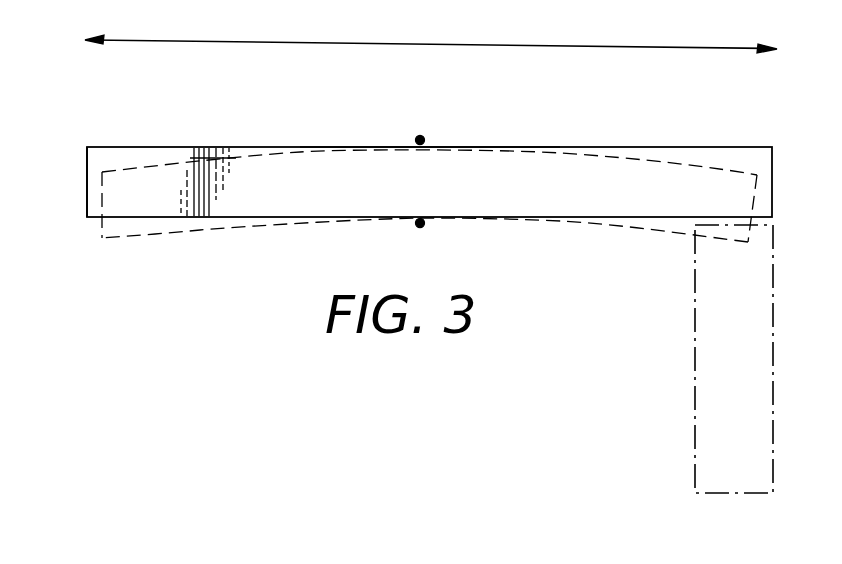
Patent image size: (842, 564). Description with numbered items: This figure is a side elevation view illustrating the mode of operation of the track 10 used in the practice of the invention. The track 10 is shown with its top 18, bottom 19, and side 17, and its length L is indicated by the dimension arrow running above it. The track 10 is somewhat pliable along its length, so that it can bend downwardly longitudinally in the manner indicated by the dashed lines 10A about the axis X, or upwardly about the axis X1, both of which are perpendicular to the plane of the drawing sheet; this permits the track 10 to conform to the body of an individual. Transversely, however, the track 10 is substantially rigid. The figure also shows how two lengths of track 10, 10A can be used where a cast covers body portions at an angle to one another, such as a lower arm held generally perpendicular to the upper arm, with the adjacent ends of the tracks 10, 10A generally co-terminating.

The track 10 is at (600, 123).
The dashed lines / second length of track 10A is at (196, 230).
The side 17 is at (131, 155).
The top 18 is at (343, 147).
The bottom 19 is at (88, 218).
The length L is at (122, 42).
The axis X is at (424, 228).
The axis X1 is at (419, 140).